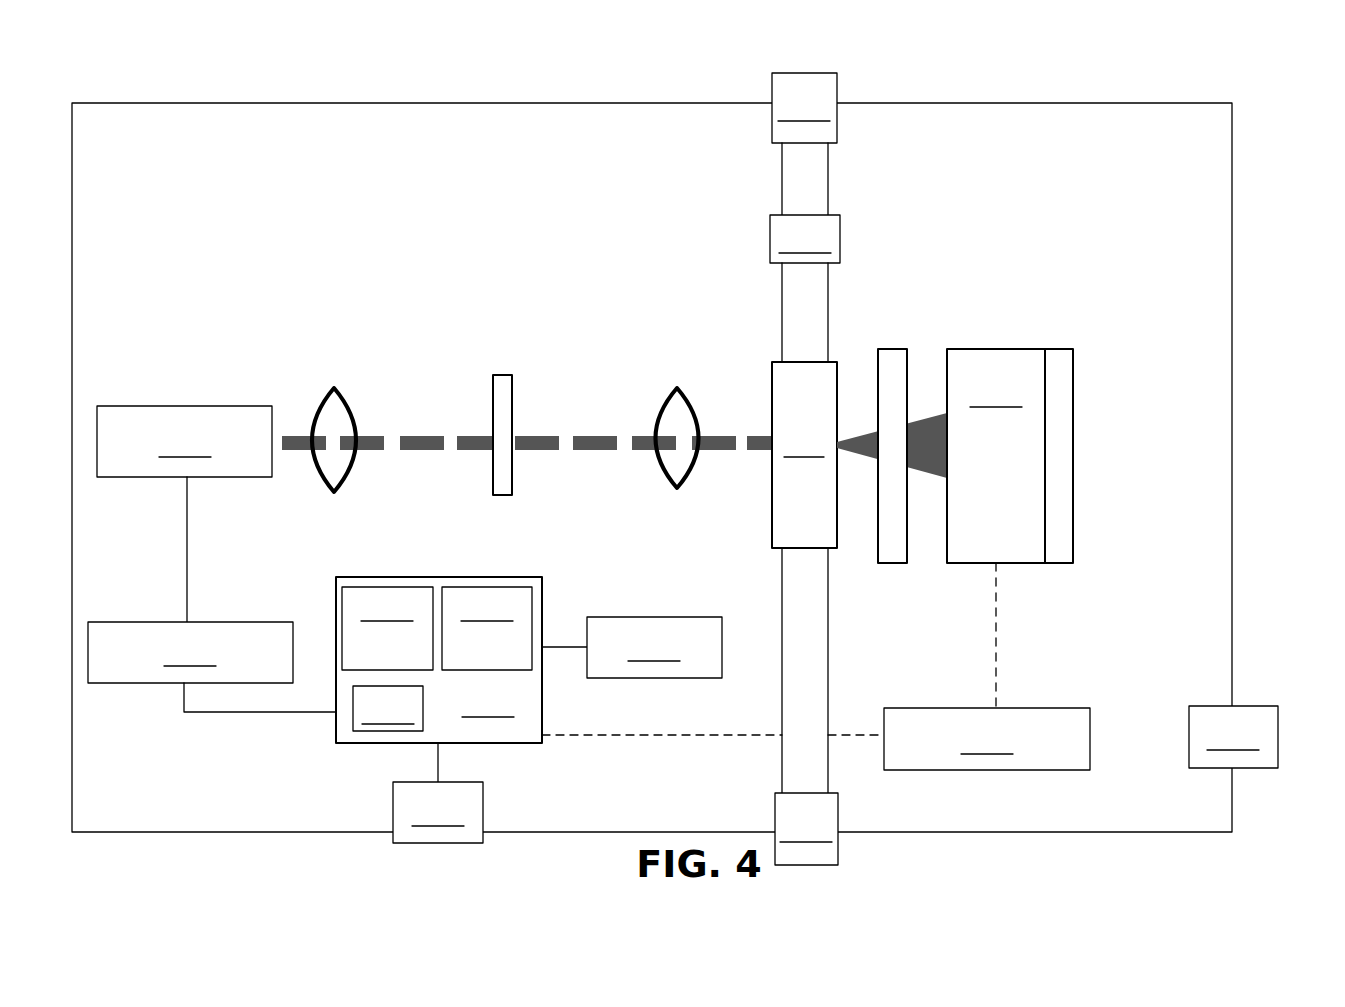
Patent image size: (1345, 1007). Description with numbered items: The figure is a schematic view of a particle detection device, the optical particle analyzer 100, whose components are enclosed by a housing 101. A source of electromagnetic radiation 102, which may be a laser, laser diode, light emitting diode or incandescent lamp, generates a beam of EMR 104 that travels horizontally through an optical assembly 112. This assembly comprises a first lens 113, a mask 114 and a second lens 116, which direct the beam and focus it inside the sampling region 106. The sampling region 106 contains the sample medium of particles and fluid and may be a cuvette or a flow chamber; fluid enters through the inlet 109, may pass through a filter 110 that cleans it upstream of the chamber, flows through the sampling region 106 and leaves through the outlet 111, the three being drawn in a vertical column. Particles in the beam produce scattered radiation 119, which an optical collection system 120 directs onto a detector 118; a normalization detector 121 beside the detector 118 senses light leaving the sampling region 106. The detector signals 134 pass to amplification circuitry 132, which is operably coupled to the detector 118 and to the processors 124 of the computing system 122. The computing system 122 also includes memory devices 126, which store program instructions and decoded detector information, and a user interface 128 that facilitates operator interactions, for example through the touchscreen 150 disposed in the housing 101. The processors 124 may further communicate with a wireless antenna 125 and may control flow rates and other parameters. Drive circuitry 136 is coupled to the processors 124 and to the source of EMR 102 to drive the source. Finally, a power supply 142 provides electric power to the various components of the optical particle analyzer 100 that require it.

The optical particle analyzer 100 is at (702, 441).
The housing 101 is at (1236, 274).
The source of electromagnetic radiation 102 is at (184, 441).
The beam of EMR 104 is at (294, 422).
The sampling region 106 is at (804, 455).
The inlet 109 is at (804, 108).
The filter 110 is at (805, 239).
The outlet 111 is at (806, 829).
The optical assembly 112 is at (486, 392).
The first lens 113 is at (318, 480).
The mask 114 is at (498, 497).
The second lens 116 is at (667, 482).
The detector 118 is at (996, 456).
The scattered radiation 119 is at (924, 462).
The optical collection system 120 is at (893, 349).
The normalization detector 121 is at (1057, 370).
The computing system 122 is at (439, 660).
The processor 124 is at (387, 628).
The wireless antenna 125 is at (654, 647).
The memory device 126 is at (487, 628).
The user interface 128 is at (388, 708).
The amplification circuitry 132 is at (987, 739).
The detector signals 134 is at (996, 640).
The drive circuitry 136 is at (190, 652).
The power supply 142 is at (1233, 737).
The touchscreen 150 is at (438, 812).